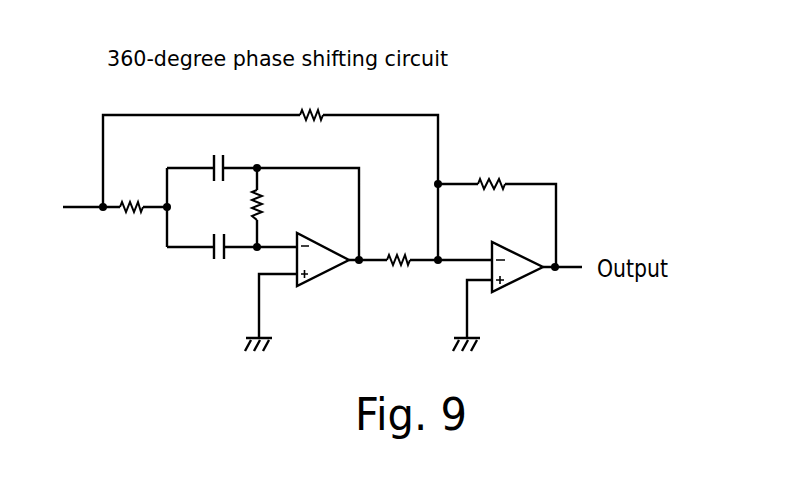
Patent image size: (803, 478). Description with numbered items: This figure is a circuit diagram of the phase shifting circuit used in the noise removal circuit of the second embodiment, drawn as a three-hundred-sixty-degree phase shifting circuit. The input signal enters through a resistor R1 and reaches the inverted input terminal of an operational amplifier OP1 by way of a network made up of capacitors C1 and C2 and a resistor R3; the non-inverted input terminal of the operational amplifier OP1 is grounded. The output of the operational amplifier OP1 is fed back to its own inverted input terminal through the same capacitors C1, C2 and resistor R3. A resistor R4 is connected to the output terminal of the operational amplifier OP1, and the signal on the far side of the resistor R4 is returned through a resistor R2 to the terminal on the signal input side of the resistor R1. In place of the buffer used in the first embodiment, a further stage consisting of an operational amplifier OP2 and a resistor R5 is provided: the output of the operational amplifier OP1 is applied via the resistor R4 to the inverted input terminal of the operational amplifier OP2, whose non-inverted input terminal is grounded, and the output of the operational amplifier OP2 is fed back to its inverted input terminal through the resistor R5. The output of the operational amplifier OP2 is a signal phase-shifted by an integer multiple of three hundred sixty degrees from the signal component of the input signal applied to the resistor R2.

The resistor R1 is at (125, 227).
The resistor R2 is at (310, 103).
The resistor R3 is at (279, 205).
The resistor R4 is at (391, 248).
The resistor R5 is at (492, 169).
The capacitor C1 is at (206, 153).
The capacitor C2 is at (206, 263).
The operational amplifier OP1 is at (321, 274).
The operational amplifier OP2 is at (522, 279).